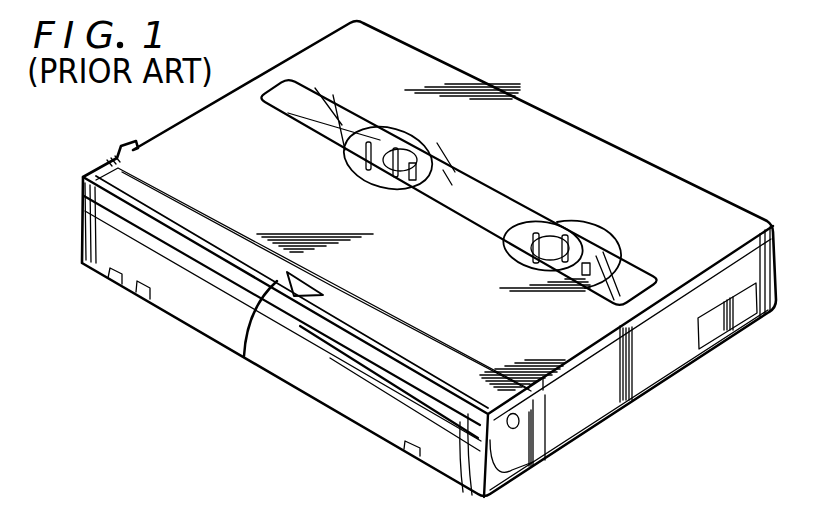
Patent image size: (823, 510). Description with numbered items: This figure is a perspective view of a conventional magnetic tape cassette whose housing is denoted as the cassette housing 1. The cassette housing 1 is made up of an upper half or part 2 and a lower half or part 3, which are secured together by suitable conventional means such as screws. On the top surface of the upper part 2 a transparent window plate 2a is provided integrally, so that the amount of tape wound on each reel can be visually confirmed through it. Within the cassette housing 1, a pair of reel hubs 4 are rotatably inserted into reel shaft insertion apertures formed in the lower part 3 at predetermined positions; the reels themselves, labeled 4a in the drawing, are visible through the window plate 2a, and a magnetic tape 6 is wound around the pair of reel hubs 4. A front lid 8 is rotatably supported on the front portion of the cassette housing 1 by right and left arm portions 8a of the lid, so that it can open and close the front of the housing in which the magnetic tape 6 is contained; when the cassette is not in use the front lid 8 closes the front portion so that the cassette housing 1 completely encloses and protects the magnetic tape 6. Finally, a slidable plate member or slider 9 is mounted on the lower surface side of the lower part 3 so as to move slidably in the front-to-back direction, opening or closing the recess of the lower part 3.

The cassette housing 1 is at (636, 44).
The upper half or part 2 is at (776, 248).
The transparent window plate 2a is at (642, 288).
The lower half or part 3 is at (773, 311).
The reel hubs 4 is at (395, 142).
The tape reel 4a is at (345, 128).
The magnetic tape 6 is at (465, 182).
The front lid 8 is at (278, 383).
The arm portions 8a is at (118, 158).
The slidable plate member or slider 9 is at (653, 384).